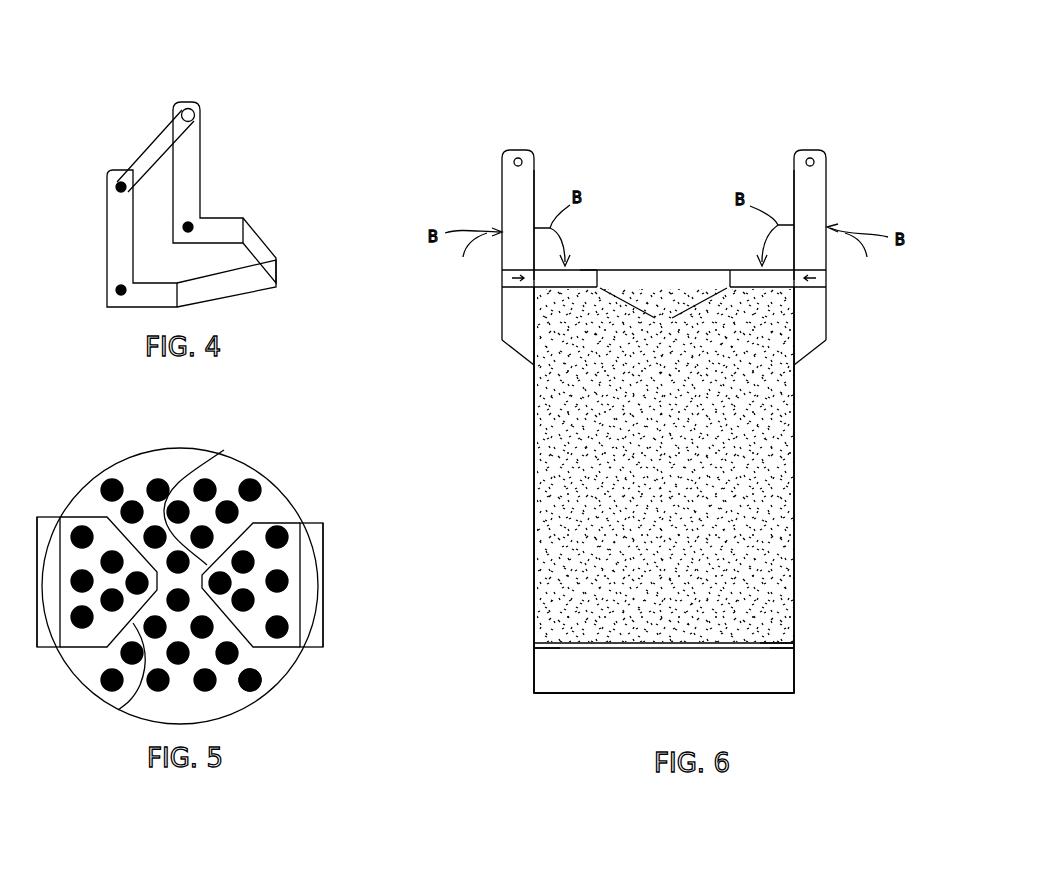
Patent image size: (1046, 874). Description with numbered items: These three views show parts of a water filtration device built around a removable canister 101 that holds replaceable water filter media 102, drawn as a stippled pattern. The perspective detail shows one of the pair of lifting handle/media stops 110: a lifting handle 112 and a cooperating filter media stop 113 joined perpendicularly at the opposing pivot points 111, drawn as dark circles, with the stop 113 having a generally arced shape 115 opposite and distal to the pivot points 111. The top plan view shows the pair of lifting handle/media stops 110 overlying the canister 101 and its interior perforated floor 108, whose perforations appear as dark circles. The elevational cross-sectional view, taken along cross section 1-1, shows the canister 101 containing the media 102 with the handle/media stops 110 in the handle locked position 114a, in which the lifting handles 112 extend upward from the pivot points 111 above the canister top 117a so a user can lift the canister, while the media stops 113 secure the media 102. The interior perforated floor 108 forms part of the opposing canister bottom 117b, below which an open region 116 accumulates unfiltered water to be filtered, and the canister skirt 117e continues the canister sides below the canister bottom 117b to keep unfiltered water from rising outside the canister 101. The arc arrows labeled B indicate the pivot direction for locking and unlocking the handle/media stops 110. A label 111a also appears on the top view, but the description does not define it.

In FIG. 6, the cross section line 1 is at (662, 395).
In FIG. 5, the removable canister 101 is at (158, 448).
In FIG. 6, the removable canister 101 is at (797, 472).
In FIG. 6, the replaceable water filter media 102 is at (661, 458).
In FIG. 5, the interior perforated floor 108 is at (262, 665).
In FIG. 6, the interior perforated floor 108 is at (767, 648).
In FIG. 4, the lifting handle/media stops 110 is at (193, 140).
In FIG. 5, the lifting handle/media stops 110 is at (174, 574).
In FIG. 6, the lifting handle/media stops 110 is at (502, 208).
In FIG. 4, the opposing pivot points 111 is at (192, 227).
In FIG. 6, the opposing pivot points 111 is at (505, 282).
In FIG. 5, the arm side 111a is at (330, 548).
In FIG. 4, the lifting handle 112 is at (168, 128).
In FIG. 6, the lifting handle 112 is at (520, 161).
In FIG. 4, the cooperating filter media stop 113 is at (272, 263).
In FIG. 5, the cooperating filter media stop 113 is at (107, 522).
In FIG. 6, the cooperating filter media stop 113 is at (618, 270).
In FIG. 5, the handle locked position 114a is at (37, 628).
In FIG. 6, the handle locked position 114a is at (542, 218).
In FIG. 4, the generally arced shape 115 is at (235, 272).
In FIG. 5, the generally arced shape 115 is at (224, 450).
In FIG. 6, the generally arced shape 115 is at (663, 311).
In FIG. 6, the open region 116 is at (663, 675).
In FIG. 6, the canister top 117a is at (589, 270).
In FIG. 5, the canister bottom 117b is at (250, 680).
In FIG. 6, the canister bottom 117b is at (718, 693).
In FIG. 6, the canister skirt 117e is at (533, 675).